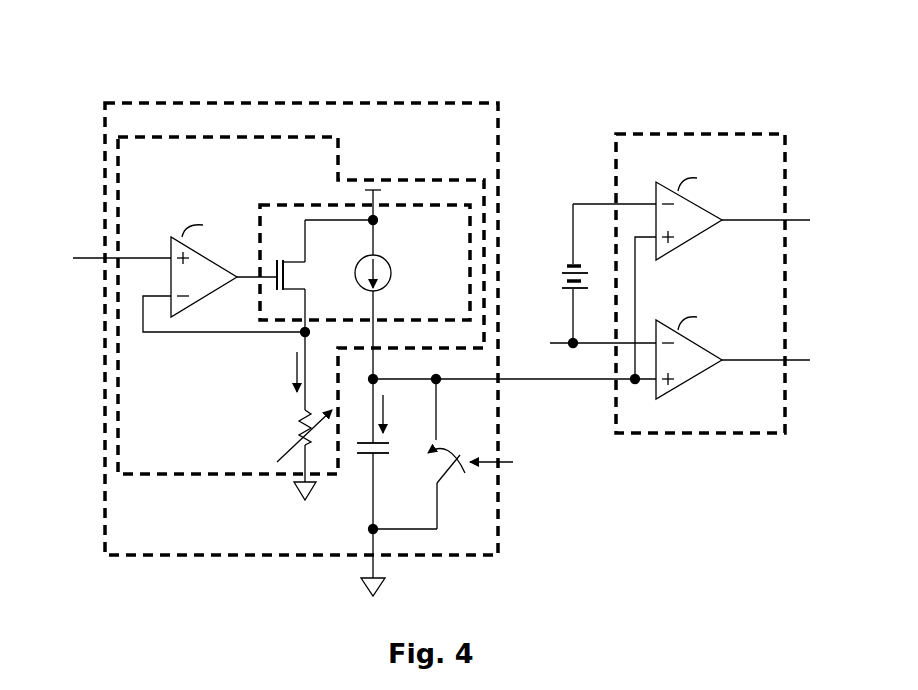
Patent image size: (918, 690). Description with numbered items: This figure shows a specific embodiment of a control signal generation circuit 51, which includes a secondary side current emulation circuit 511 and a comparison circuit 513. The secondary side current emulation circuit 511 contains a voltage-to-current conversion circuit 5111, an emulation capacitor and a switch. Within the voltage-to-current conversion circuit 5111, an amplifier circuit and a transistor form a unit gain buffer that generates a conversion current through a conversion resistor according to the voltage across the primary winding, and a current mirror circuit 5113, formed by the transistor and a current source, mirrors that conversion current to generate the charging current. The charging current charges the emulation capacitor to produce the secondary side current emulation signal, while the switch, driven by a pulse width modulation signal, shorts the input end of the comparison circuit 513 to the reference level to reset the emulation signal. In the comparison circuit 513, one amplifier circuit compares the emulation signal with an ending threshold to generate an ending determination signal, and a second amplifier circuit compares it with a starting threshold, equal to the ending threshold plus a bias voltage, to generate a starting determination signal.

The control signal generation circuit 51 is at (765, 46).
The secondary side current emulation circuit 511 is at (156, 531).
The voltage-to-current conversion circuit 5111 is at (176, 167).
The current mirror circuit 5113 is at (454, 243).
The comparison circuit 513 is at (767, 167).